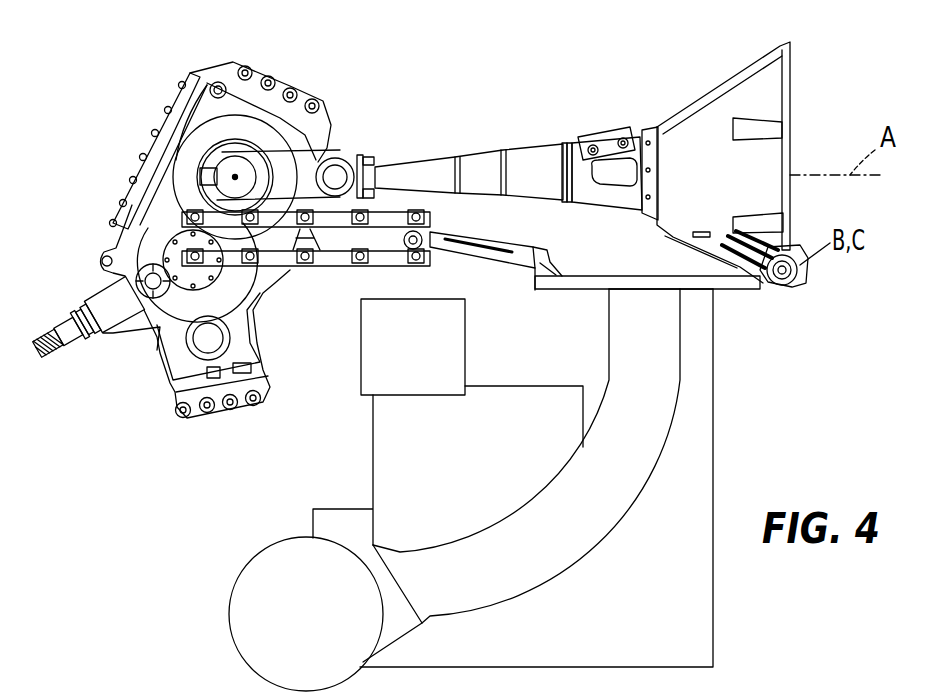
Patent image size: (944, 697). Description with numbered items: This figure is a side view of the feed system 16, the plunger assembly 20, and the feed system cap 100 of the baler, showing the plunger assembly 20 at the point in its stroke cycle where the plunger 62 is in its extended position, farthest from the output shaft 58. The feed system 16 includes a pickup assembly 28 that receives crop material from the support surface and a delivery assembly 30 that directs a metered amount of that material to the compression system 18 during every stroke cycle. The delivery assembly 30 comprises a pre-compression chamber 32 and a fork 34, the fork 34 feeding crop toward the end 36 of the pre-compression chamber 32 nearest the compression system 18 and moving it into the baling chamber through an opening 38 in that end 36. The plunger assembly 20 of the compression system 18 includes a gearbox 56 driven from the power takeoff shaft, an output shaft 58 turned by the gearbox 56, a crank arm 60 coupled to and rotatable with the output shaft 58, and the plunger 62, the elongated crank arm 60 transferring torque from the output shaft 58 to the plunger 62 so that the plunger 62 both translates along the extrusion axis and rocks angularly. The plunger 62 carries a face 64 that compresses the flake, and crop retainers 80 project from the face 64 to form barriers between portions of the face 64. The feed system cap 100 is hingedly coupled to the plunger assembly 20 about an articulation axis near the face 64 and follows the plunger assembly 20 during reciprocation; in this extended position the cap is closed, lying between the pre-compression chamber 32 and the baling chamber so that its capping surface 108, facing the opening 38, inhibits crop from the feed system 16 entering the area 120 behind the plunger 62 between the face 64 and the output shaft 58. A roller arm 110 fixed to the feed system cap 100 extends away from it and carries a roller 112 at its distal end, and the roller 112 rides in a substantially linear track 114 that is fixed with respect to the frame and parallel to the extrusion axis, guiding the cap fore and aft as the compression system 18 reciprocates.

The feed system 16 is at (720, 489).
The compression system 18 is at (139, 79).
The plunger assembly 20 is at (595, 112).
The pickup assembly 28 is at (244, 542).
The delivery assembly 30 is at (592, 575).
The pre-compression chamber 32 is at (627, 520).
The fork 34 is at (358, 377).
The end 36 is at (690, 306).
The opening 38 is at (643, 291).
The gearbox 56 is at (213, 130).
The output shaft 58 is at (213, 140).
The crank arm 60 is at (276, 150).
The plunger 62 is at (722, 78).
The face 64 is at (798, 132).
The crop retainers 80 is at (790, 222).
The feed system cap 100 is at (550, 292).
The capping surface 108 is at (592, 300).
The roller arm 110 is at (470, 250).
The roller 112 is at (436, 250).
The track 114 is at (318, 268).
The area 120 is at (604, 240).